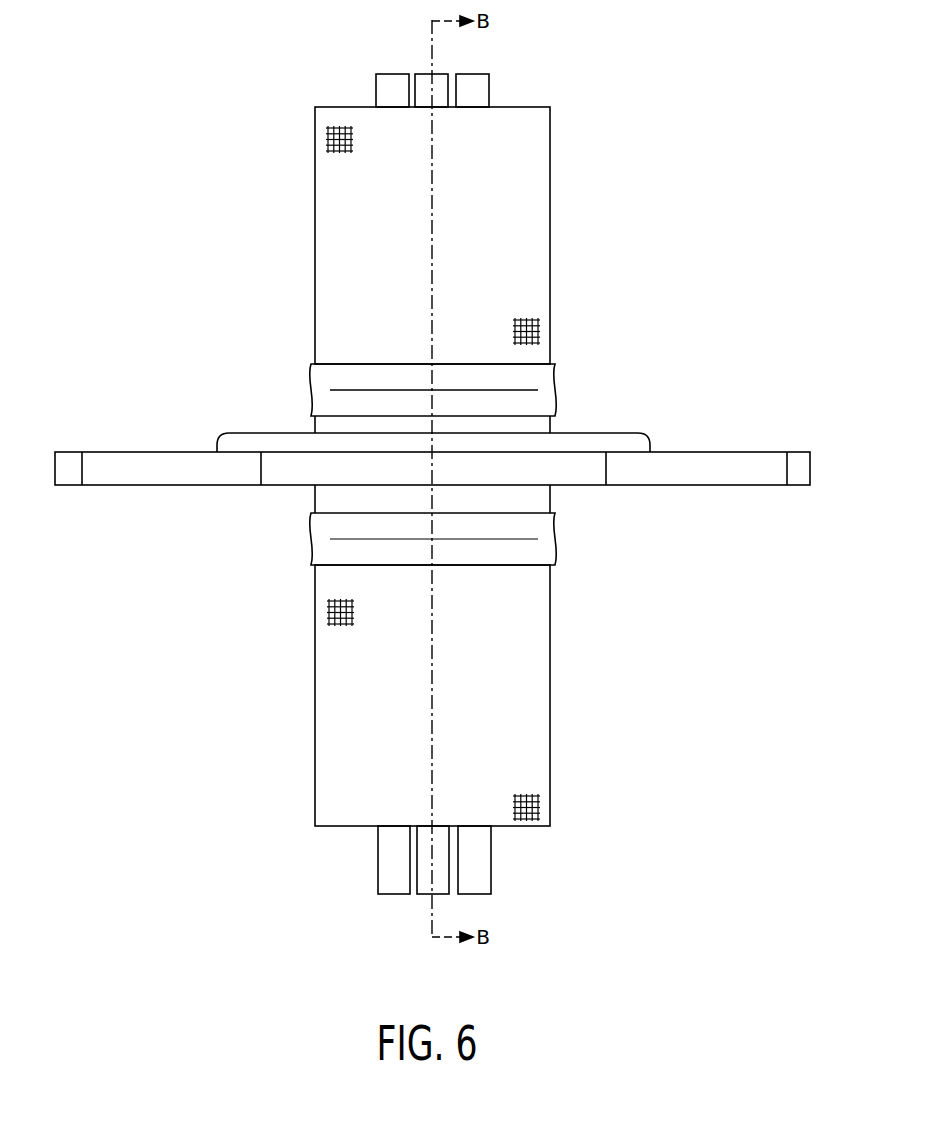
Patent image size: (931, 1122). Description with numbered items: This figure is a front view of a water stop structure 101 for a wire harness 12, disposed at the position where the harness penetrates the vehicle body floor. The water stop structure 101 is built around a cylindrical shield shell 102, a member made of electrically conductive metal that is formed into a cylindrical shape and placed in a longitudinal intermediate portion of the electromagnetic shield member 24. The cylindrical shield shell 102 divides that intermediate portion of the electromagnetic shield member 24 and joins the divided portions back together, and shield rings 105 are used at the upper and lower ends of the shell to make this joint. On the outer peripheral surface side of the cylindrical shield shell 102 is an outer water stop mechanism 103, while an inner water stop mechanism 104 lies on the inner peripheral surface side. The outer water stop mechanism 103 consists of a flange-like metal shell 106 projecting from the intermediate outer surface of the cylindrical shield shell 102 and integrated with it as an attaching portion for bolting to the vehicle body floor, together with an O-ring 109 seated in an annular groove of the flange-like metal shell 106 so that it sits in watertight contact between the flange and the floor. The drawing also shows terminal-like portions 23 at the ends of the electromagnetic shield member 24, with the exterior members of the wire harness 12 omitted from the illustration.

The wire harness 12 is at (322, 82).
The terminal pins 23 is at (427, 87).
The electromagnetic shield member 24 is at (542, 158).
The water stop structure 101 is at (716, 325).
The cylindrical shield shell 102 is at (542, 497).
The outer water stop mechanism 103 is at (82, 384).
The inner water stop mechanism 104 is at (507, 501).
The shield ring 105 is at (459, 485).
The flange-like metal shell 106 is at (135, 463).
The O-ring 109 is at (243, 440).